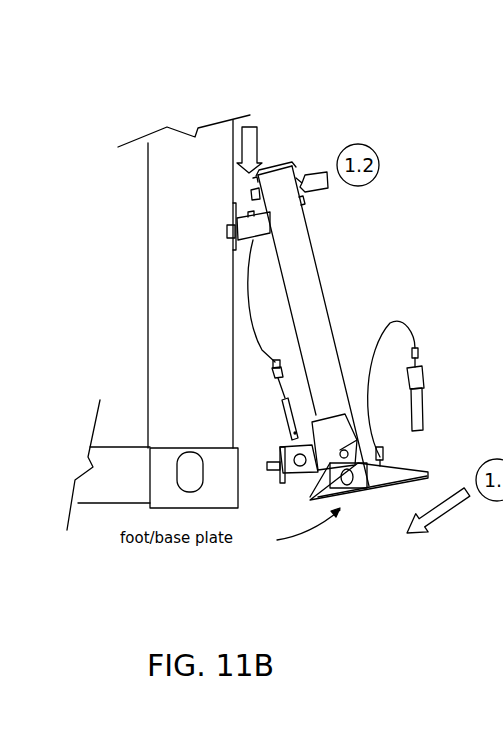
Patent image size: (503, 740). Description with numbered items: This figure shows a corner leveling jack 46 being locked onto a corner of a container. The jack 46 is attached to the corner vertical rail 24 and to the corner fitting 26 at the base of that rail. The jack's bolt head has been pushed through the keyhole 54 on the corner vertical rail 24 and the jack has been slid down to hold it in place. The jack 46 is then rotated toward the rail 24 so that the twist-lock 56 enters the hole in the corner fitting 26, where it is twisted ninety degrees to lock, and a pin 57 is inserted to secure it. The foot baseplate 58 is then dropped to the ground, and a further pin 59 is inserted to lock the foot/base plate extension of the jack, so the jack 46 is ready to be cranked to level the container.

The vertical rail 24 is at (148, 310).
The corner fitting 26 is at (170, 448).
The corner leveling jack 46 is at (320, 283).
The keyhole 54 is at (223, 215).
The twist-lock 56 is at (288, 477).
The pin 57 is at (292, 408).
The foot baseplate 58 is at (428, 467).
The pin 59 is at (427, 406).